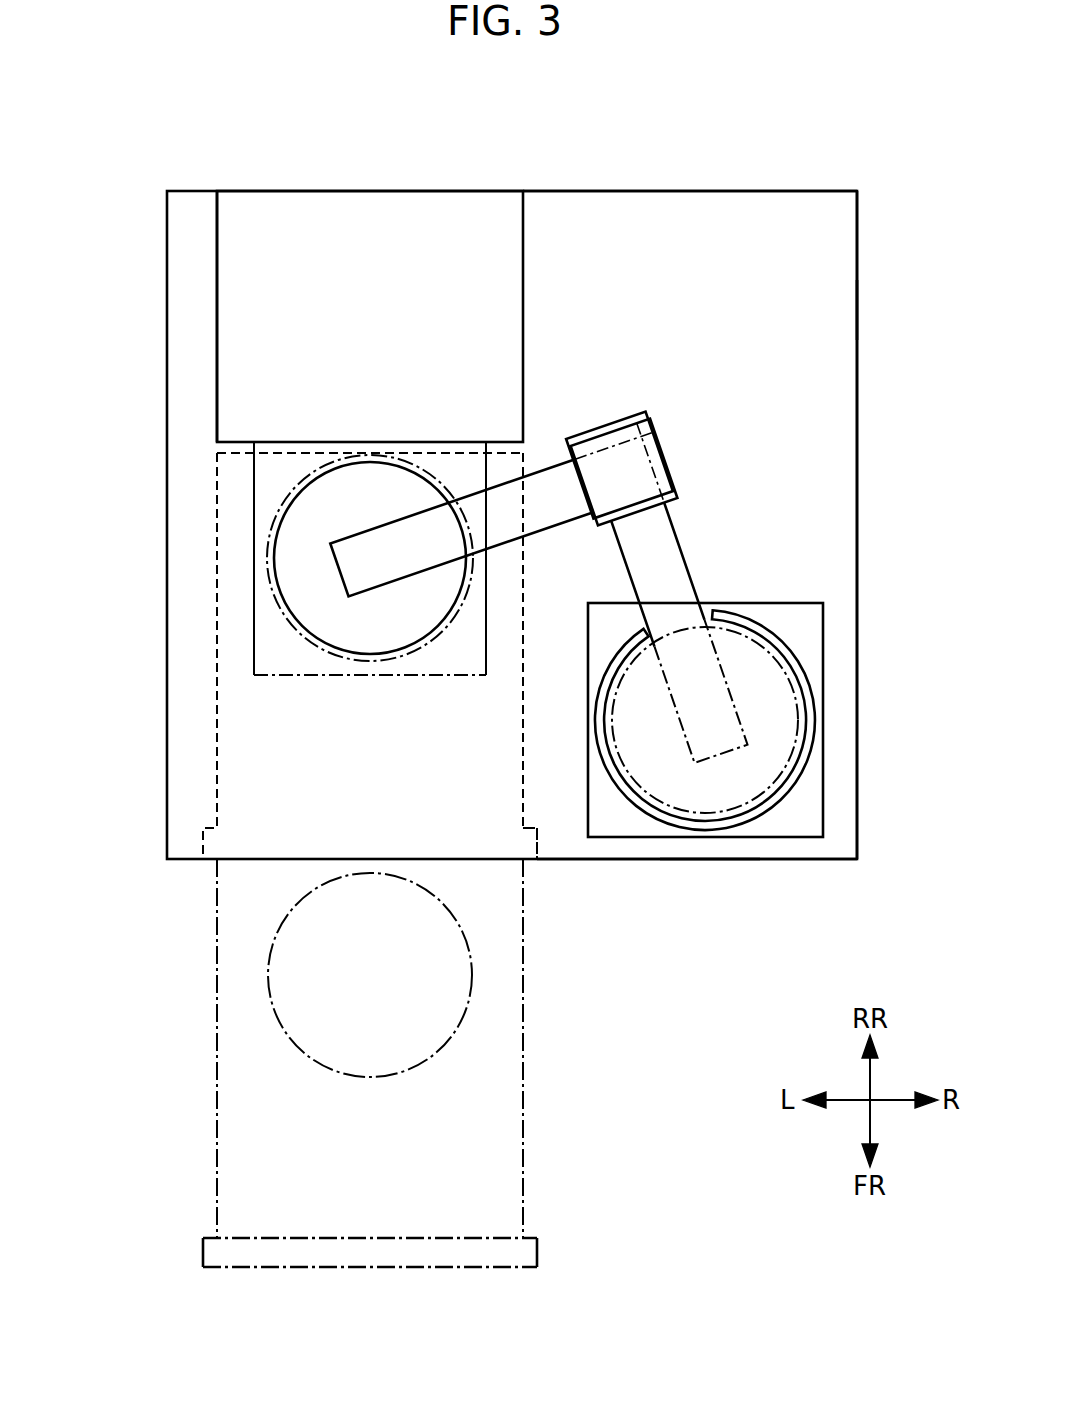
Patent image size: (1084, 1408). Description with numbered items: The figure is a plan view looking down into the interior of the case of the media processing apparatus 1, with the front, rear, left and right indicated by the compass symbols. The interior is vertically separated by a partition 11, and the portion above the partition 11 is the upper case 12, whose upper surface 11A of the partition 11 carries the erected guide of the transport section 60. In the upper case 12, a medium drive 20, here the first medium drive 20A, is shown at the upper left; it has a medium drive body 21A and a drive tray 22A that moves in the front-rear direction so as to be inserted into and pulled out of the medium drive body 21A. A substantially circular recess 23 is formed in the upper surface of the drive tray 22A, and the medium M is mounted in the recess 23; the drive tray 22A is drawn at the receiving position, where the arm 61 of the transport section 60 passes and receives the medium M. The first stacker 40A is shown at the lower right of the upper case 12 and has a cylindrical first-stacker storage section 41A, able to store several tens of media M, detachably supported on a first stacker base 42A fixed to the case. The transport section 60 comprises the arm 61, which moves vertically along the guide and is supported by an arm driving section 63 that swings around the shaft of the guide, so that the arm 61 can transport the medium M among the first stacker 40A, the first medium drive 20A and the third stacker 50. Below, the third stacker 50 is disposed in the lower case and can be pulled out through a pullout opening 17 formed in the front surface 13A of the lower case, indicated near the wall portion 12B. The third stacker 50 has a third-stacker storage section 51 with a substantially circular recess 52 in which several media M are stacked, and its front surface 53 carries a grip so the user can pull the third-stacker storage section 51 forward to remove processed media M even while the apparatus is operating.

The media processing apparatus 1 is at (633, 159).
The partition 11 is at (748, 296).
The upper surface of the partition 11A is at (808, 300).
The upper case 12 is at (858, 228).
The rear wall portion 12B is at (704, 860).
The front surface of the lower case 13A is at (635, 860).
The pullout opening 17 is at (520, 861).
The medium drive 20 is at (283, 316).
The first medium drive 20A is at (227, 306).
The medium drive body 21A is at (217, 414).
The drive tray 22A is at (253, 487).
The recess 23 is at (270, 520).
The medium M is at (275, 562).
The first stacker 40A is at (773, 701).
The first-stacker storage section 41A is at (800, 655).
The first stacker base 42A is at (797, 603).
The third stacker 50 is at (395, 1110).
The third-stacker storage section 51 is at (255, 1173).
The recess 52 is at (468, 1000).
The front surface of the third stacker 53 is at (343, 1268).
The transport section 60 is at (609, 564).
The arm 61 is at (660, 553).
The arm driving section 63 is at (610, 421).